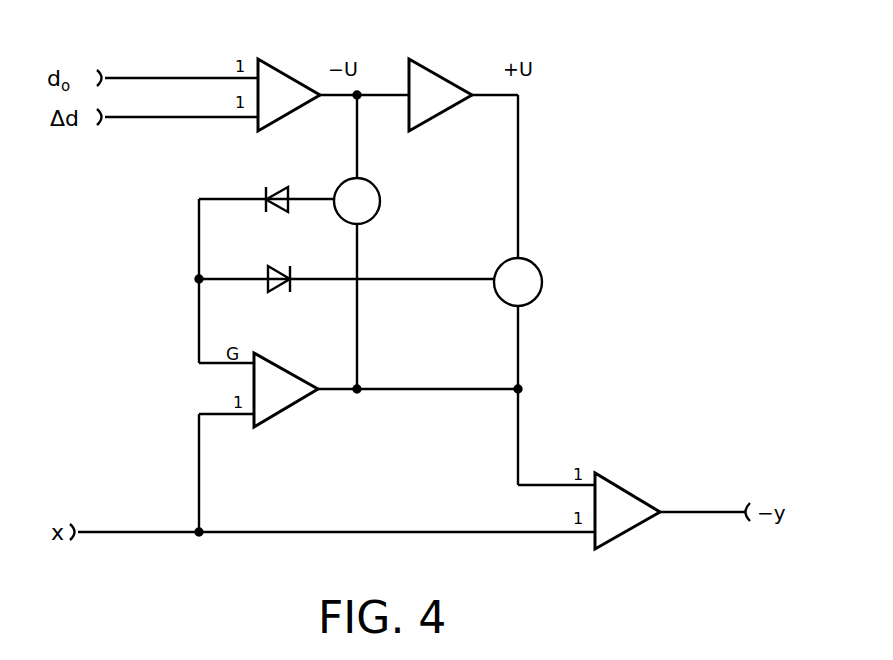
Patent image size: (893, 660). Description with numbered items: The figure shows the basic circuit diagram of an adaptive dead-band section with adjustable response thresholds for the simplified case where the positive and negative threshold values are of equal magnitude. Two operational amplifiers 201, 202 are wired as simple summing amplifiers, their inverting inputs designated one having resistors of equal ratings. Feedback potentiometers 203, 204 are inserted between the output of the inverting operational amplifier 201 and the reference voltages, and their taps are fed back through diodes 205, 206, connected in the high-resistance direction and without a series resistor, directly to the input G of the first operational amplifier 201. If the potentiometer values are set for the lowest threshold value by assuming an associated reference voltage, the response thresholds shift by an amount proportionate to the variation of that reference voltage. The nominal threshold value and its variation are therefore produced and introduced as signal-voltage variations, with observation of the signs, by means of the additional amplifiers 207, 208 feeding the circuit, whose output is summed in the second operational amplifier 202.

The inverting operational amplifier 201 is at (292, 395).
The operational amplifier 202 is at (628, 502).
The feedback potentiometer 203 is at (372, 201).
The feedback potentiometer 204 is at (530, 275).
The diode 205 is at (278, 187).
The diode 206 is at (277, 265).
The additional amplifier 207 is at (278, 83).
The additional amplifier 208 is at (438, 78).